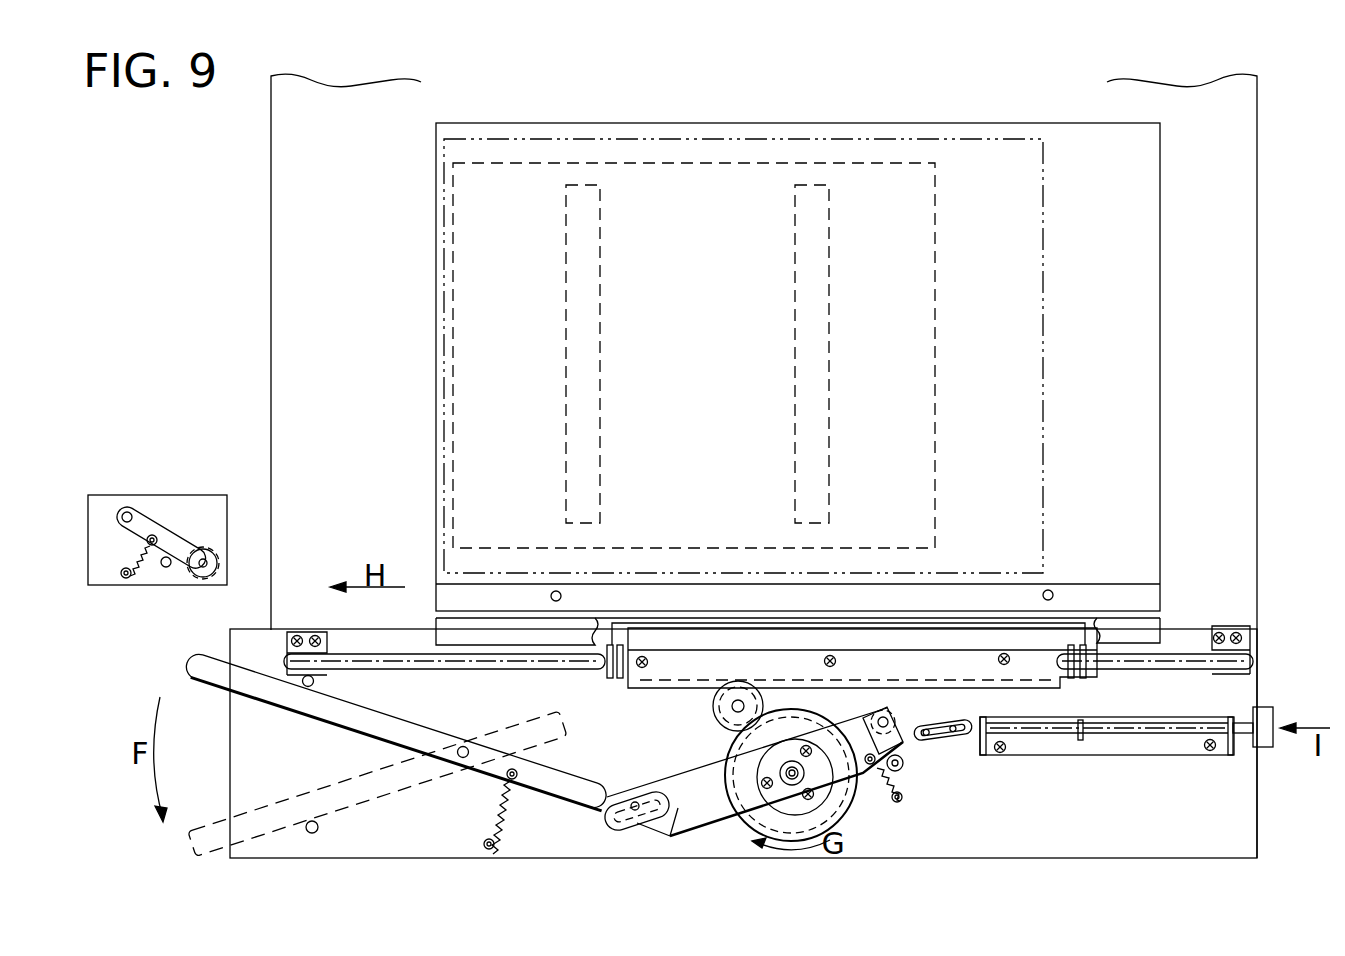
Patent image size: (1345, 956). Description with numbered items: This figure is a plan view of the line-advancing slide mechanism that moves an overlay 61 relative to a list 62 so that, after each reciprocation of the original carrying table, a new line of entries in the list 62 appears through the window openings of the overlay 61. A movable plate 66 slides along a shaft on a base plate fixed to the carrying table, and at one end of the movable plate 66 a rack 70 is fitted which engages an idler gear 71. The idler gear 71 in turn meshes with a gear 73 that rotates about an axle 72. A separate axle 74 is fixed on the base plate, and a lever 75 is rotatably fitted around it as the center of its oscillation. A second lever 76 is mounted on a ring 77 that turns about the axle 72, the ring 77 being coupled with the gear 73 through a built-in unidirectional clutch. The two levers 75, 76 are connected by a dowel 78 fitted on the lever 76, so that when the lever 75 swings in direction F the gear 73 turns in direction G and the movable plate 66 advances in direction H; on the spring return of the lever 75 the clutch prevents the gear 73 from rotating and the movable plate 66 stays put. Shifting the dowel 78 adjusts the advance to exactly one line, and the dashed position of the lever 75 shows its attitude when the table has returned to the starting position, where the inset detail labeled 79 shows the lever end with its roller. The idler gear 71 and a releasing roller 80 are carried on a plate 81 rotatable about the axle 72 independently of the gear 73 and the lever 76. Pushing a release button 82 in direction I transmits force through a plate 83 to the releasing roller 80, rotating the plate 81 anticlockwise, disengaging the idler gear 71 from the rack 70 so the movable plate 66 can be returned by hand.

The overlay 61 is at (897, 175).
The list 62 is at (1003, 148).
The movable plate 66 is at (440, 623).
The rack 70 is at (647, 670).
The idler gear 71 is at (715, 712).
The axle 72 is at (780, 770).
The gear 73 is at (845, 805).
The axle 74 is at (463, 757).
The lever 75 is at (313, 722).
The lever 76 is at (690, 813).
The ring 77 is at (780, 803).
The dowel 78 is at (635, 803).
The roller 79 is at (203, 563).
The releasing roller 80 is at (907, 714).
The plate 81 is at (855, 728).
The release button 82 is at (1265, 716).
The plate 83 is at (922, 740).